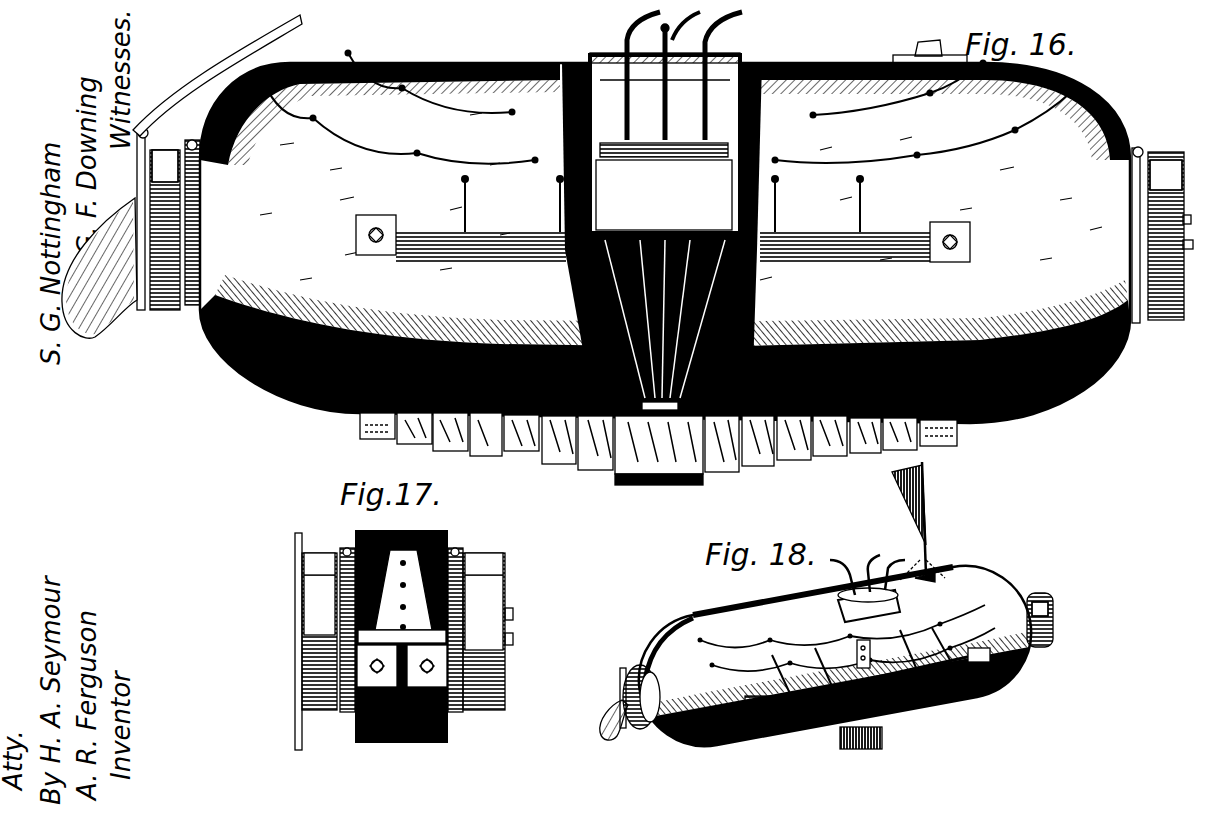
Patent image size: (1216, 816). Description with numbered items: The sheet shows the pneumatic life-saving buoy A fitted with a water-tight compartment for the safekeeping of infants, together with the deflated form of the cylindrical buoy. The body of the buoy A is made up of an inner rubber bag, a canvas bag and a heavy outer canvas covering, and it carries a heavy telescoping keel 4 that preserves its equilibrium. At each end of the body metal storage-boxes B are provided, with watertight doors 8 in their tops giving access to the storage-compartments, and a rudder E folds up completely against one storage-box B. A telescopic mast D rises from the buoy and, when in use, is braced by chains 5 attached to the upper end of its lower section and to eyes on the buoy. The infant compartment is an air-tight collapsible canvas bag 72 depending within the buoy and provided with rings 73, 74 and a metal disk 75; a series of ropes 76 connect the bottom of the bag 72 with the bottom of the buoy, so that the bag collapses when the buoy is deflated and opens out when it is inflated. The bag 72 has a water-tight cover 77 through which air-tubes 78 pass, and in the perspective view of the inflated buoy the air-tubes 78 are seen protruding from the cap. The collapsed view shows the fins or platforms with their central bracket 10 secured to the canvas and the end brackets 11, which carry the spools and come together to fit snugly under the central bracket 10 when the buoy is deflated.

In FIG. 16, the telescoping keel 4 is at (658, 463).
In FIG. 18, the telescoping keel 4 is at (865, 742).
In FIG. 18, the chains 5 is at (933, 562).
In FIG. 16, the watertight doors 8 is at (667, 159).
In FIG. 17, the watertight doors 8 is at (403, 551).
In FIG. 18, the watertight doors 8 is at (1039, 594).
In FIG. 17, the central bracket 10 is at (440, 632).
In FIG. 17, the end brackets 11 is at (430, 672).
In FIG. 18, the end brackets 11 is at (751, 692).
In FIG. 16, the collapsible canvas bag 72 is at (665, 144).
In FIG. 18, the collapsible canvas bag 72 is at (845, 609).
In FIG. 16, the ring 73 is at (755, 58).
In FIG. 16, the ring 74 is at (690, 160).
In FIG. 16, the metal disk 75 is at (664, 195).
In FIG. 16, the ropes 76 is at (700, 270).
In FIG. 16, the water-tight cover 77 is at (673, 76).
In FIG. 18, the water-tight cover 77 is at (886, 572).
In FIG. 16, the air-tubes 78 is at (625, 35).
In FIG. 18, the air-tubes 78 is at (833, 563).
In FIG. 16, the buoy A is at (665, 231).
In FIG. 18, the buoy A is at (835, 656).
In FIG. 16, the storage-boxes B is at (138, 186).
In FIG. 17, the storage-boxes B is at (302, 615).
In FIG. 18, the storage-boxes B is at (1062, 616).
In FIG. 18, the telescopic mast D is at (930, 532).
In FIG. 16, the rudder E is at (99, 278).
In FIG. 18, the rudder E is at (613, 732).